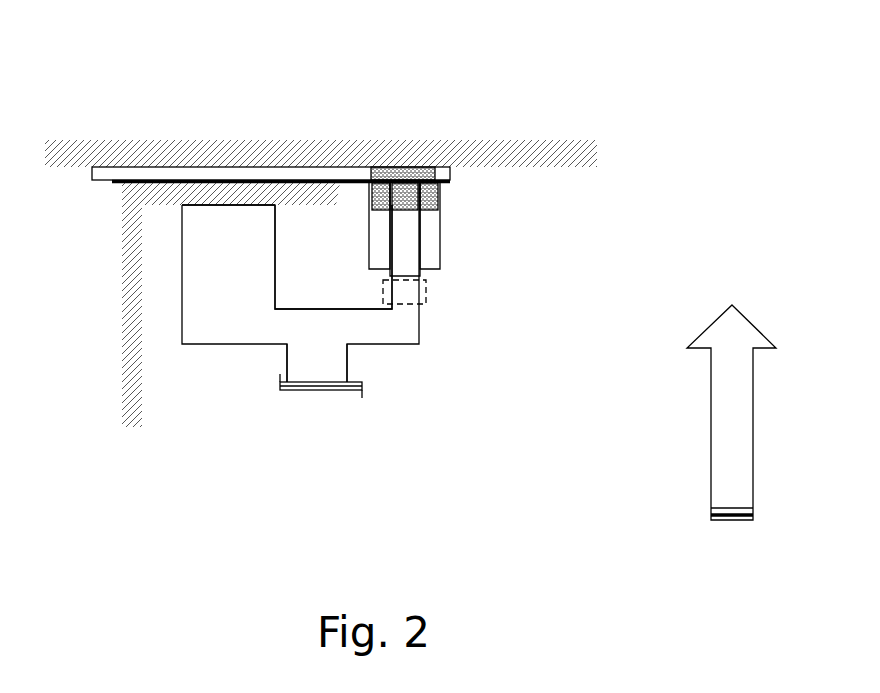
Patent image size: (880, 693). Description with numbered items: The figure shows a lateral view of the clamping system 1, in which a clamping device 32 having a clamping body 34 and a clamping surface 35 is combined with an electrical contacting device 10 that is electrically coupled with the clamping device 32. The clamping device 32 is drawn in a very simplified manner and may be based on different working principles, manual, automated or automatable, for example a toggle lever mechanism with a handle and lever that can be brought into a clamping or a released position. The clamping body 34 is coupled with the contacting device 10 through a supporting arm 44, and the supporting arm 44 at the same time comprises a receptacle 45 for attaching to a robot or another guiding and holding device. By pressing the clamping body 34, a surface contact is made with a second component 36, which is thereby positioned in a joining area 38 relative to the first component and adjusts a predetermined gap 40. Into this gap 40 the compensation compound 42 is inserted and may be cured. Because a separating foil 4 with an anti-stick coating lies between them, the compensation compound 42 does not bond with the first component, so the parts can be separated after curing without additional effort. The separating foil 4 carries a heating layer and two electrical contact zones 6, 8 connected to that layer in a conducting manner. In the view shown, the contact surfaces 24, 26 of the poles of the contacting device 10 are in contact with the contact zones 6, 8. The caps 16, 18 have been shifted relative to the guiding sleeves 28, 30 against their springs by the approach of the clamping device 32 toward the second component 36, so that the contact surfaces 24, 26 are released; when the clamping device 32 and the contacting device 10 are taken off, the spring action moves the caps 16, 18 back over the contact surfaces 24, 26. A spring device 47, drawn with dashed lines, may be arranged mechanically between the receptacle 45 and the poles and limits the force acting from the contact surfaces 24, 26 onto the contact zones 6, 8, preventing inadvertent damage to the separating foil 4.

The clamping system 1 is at (510, 116).
The separating foil 4 is at (100, 167).
The electrical contact zone 6 is at (393, 108).
The electrical contact zone 8 is at (410, 170).
The contacting device 10 is at (465, 171).
The cap 16 is at (485, 201).
The cap 18 is at (440, 197).
The contact surface 24 is at (438, 130).
The contact surface 26 is at (420, 168).
The guiding sleeve 28 is at (473, 226).
The guiding sleeve 30 is at (440, 249).
The clamping device 32 is at (300, 281).
The clamping body 34 is at (252, 265).
The clamping surface 35 is at (235, 198).
The second component 36 is at (133, 405).
The joining area 38 is at (330, 88).
The gap 40 is at (100, 184).
The compensation compound 42 is at (338, 190).
The supporting arm 44 is at (328, 333).
The receptacle 45 is at (336, 363).
The spring device 47 is at (428, 297).